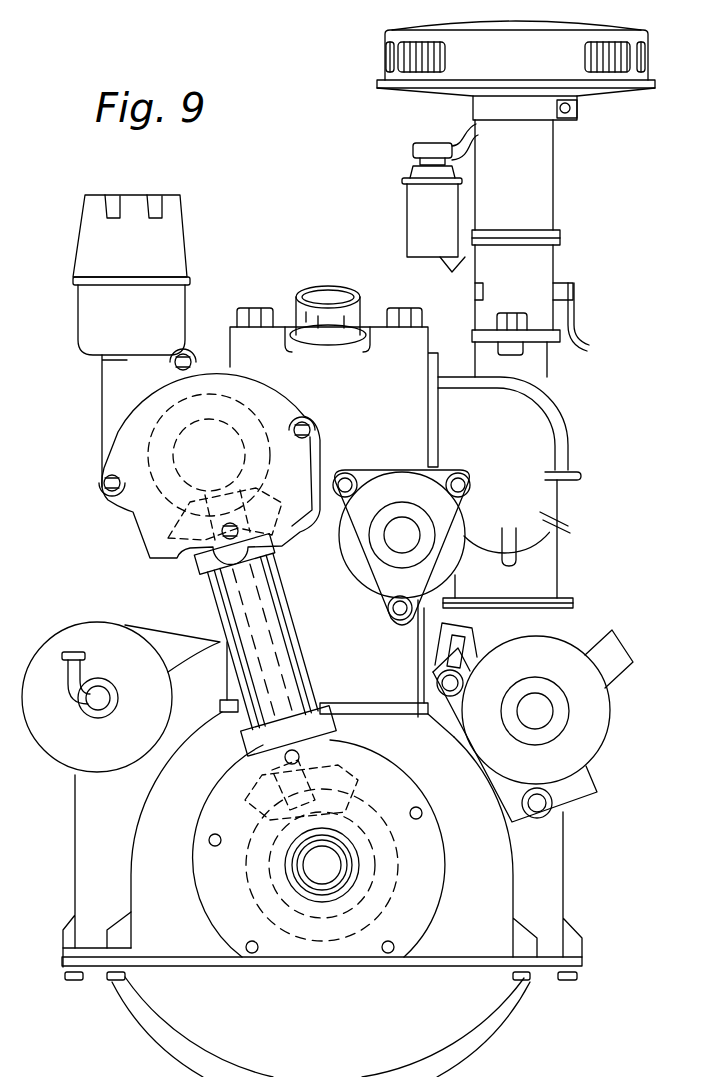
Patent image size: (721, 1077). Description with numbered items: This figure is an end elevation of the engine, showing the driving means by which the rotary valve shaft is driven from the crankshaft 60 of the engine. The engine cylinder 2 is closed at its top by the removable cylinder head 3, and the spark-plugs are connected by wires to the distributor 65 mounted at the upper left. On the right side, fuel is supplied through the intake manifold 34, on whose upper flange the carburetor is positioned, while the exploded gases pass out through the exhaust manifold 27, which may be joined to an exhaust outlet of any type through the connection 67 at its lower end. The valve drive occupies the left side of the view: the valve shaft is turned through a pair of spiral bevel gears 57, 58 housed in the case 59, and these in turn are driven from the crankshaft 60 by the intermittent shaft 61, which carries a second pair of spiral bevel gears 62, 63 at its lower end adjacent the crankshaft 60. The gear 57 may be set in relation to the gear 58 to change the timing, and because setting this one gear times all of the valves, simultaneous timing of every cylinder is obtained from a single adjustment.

The engine cylinder 2 is at (415, 650).
The removable cylinder head 3 is at (232, 328).
The exhaust manifold 27 is at (535, 494).
The intake manifold 34 is at (544, 408).
The spiral bevel gear 57 is at (156, 428).
The spiral bevel gear 58 is at (168, 524).
The case 59 is at (142, 438).
The crankshaft 60 is at (348, 868).
The intermittent shaft 61 is at (205, 590).
The spiral bevel gear 62 is at (370, 770).
The spiral bevel gear 63 is at (378, 808).
The distributor 65 is at (80, 332).
The connection 67 is at (548, 598).